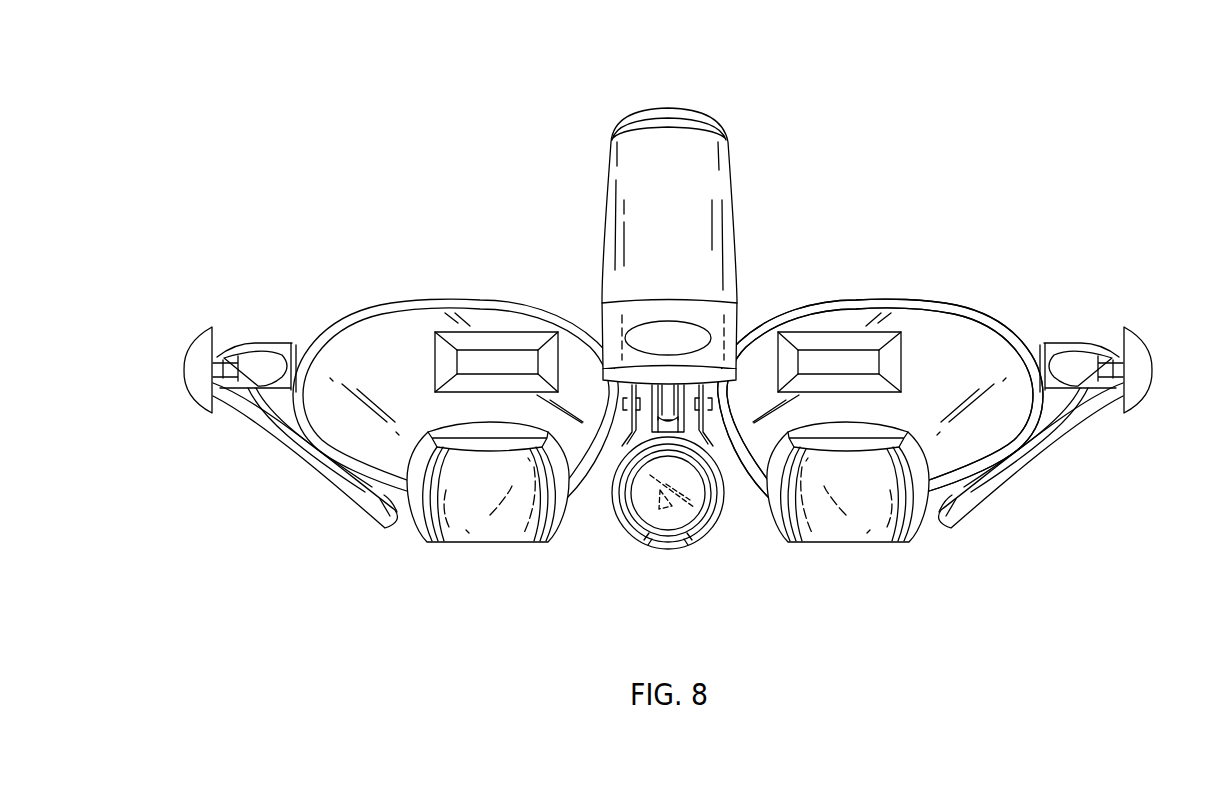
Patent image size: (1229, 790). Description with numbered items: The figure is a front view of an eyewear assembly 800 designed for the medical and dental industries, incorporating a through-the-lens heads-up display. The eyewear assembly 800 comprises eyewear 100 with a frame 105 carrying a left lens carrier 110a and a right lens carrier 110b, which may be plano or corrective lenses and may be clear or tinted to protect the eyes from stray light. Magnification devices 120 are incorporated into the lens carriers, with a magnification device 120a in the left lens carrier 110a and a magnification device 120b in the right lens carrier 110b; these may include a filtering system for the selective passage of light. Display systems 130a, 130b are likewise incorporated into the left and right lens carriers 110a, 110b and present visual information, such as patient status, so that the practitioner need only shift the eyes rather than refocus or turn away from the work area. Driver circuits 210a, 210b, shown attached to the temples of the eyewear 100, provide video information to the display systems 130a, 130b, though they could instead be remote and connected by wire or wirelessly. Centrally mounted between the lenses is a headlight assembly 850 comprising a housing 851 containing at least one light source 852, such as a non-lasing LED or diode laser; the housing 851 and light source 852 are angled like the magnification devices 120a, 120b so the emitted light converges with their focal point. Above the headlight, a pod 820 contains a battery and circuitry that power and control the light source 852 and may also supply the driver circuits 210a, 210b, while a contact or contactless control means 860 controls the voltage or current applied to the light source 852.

The eyewear assembly 800 is at (457, 82).
The pod 820 is at (718, 192).
The headlight assembly 850 is at (645, 422).
The housing 851 is at (690, 540).
The light source 852 is at (645, 554).
The control means 860 is at (708, 349).
The eyewear 100 is at (872, 304).
The frame rim 105 is at (956, 304).
The left lens carrier 110a is at (352, 345).
The right lens carrier 110b is at (1000, 350).
The display system 130a is at (511, 338).
The display system 130b is at (848, 345).
The magnification devices 120 is at (418, 525).
The magnification device 120a is at (482, 535).
The magnification device 120b is at (856, 538).
The driver circuit 210a is at (200, 418).
The driver circuit 210b is at (1135, 405).